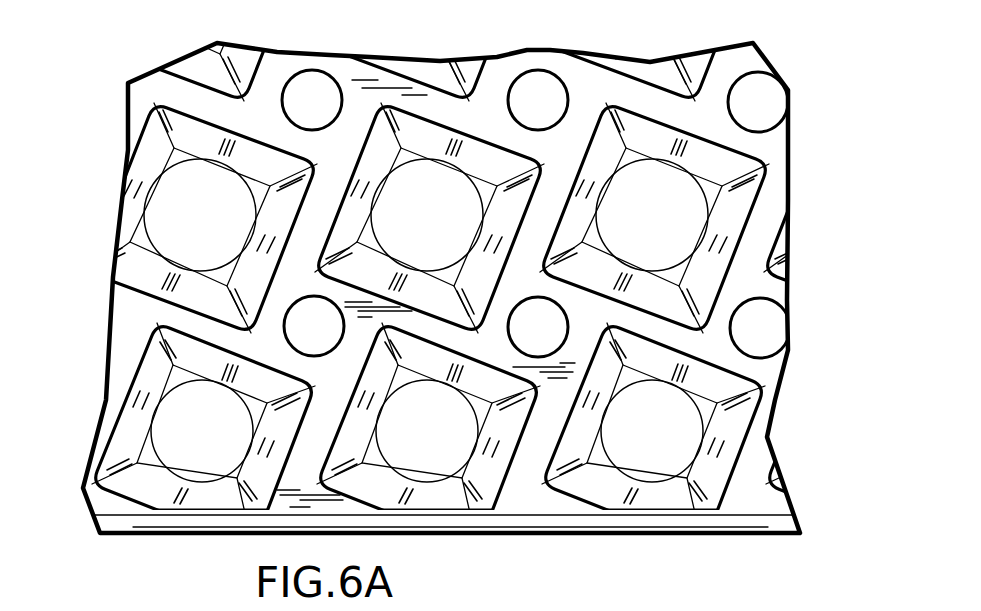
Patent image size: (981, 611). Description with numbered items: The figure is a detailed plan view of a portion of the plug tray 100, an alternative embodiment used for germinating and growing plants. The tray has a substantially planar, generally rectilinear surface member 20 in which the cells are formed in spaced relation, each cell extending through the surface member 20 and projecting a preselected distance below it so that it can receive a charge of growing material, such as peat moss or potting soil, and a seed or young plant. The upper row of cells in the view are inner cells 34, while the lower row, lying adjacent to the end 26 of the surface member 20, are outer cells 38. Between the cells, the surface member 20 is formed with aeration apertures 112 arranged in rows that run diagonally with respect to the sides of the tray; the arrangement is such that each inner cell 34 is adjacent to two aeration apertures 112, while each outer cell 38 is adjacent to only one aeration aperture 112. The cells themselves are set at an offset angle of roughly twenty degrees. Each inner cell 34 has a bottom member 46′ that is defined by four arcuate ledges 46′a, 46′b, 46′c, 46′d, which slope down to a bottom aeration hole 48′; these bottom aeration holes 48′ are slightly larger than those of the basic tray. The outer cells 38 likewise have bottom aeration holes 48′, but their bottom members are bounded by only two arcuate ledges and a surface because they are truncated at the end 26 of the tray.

The plug tray 100 is at (106, 87).
The surface member 20 is at (753, 42).
The inner cell 34 is at (142, 182).
The outer cell 38 is at (133, 425).
The aeration aperture 112 is at (312, 92).
The bottom aeration hole 48′ is at (432, 225).
The bottom member 46′ is at (172, 124).
The arcuate ledge 46′a is at (402, 148).
The arcuate ledge 46′b is at (497, 189).
The arcuate ledge 46′c is at (452, 287).
The arcuate ledge 46′d is at (367, 237).
The end 26 is at (547, 533).